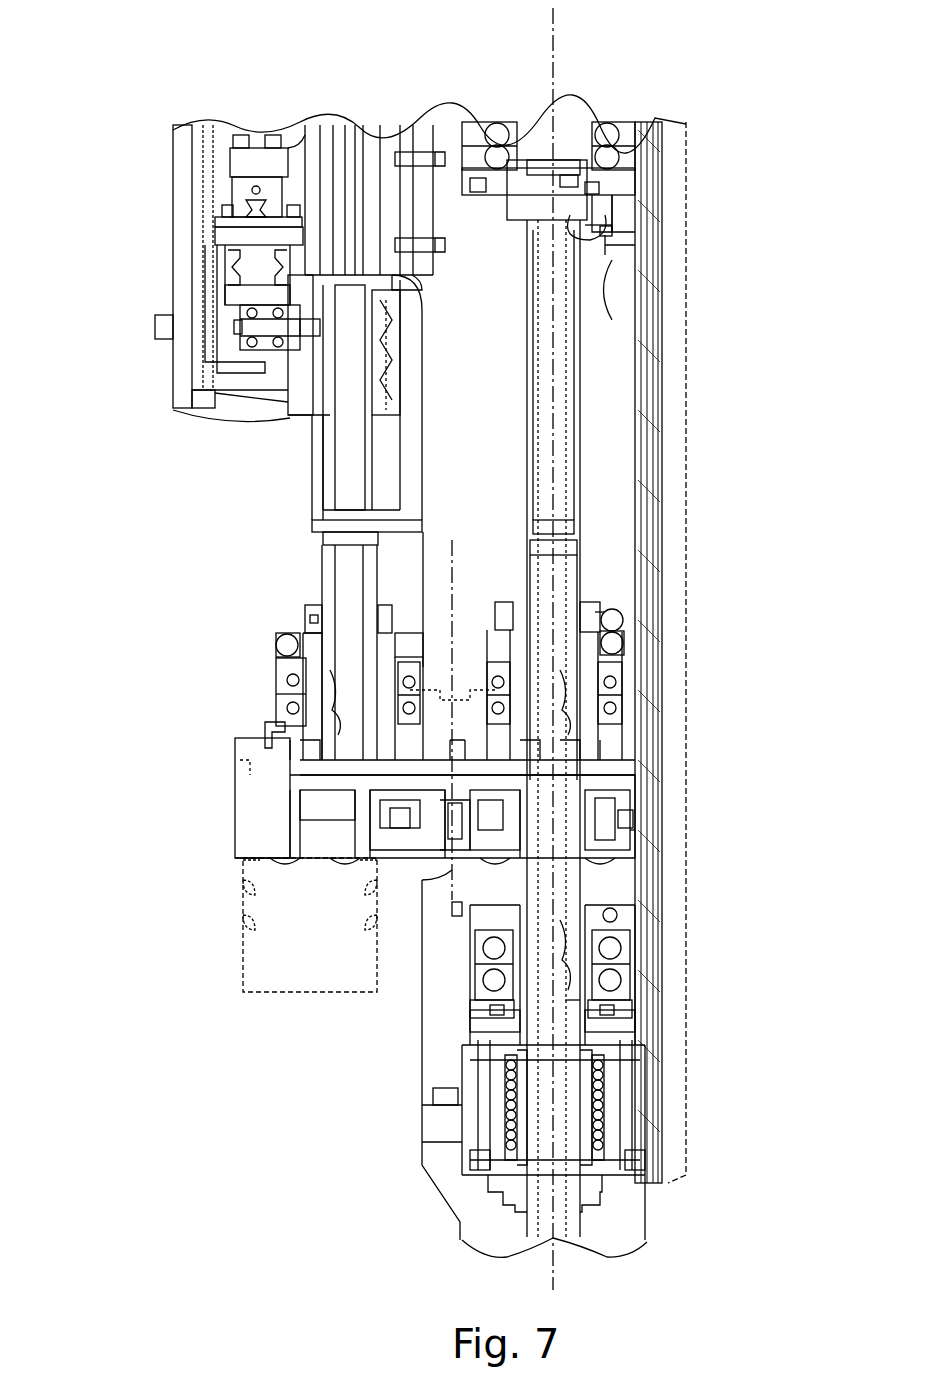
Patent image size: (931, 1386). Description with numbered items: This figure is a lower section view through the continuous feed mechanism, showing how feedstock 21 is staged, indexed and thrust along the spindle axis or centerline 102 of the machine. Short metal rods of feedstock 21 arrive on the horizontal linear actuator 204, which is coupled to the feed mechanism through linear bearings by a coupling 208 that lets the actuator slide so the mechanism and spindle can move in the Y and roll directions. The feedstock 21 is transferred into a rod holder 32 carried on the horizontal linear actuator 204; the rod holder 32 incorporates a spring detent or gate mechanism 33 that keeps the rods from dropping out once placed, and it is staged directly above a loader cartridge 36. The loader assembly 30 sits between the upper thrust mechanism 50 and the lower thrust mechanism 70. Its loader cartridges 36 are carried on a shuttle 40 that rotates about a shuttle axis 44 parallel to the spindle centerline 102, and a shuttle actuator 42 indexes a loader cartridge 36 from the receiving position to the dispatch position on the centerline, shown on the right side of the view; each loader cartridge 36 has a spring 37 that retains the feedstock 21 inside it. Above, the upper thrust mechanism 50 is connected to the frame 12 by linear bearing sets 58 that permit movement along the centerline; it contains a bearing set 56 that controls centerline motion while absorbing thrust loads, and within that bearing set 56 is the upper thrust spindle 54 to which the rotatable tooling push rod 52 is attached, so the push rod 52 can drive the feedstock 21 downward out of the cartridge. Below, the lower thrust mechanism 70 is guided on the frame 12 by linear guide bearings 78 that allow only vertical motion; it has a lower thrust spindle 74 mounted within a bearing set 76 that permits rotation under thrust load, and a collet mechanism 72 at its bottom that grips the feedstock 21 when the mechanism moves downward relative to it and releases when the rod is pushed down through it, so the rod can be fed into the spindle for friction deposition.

The spindle axis/centerline 102 is at (553, 18).
The upper thrust spindle 54 is at (575, 130).
The bearing set 56 is at (492, 125).
The upper thrust mechanism 50 is at (650, 142).
The coupling 208 is at (245, 165).
The horizontal linear actuator 204 is at (207, 285).
The linear bearing sets 58 is at (628, 280).
The spring detent or gate mechanism 33 is at (365, 388).
The rod holder 32 is at (303, 400).
The tooling push rod 52 is at (570, 425).
The feedstock 21 is at (325, 462).
The frame 12 is at (686, 580).
The shuttle axis 44 is at (452, 570).
The loader cartridges 36 is at (510, 612).
The shuttle 40 is at (282, 685).
The spring 37 is at (280, 732).
The loader assembly 30 is at (225, 800).
The linear guide bearings 78 is at (622, 865).
The shuttle actuator 42 is at (245, 925).
The bearing set 76 is at (612, 945).
The lower thrust mechanism 70 is at (445, 990).
The lower thrust spindle 74 is at (600, 995).
The collet mechanism 72 is at (590, 1112).